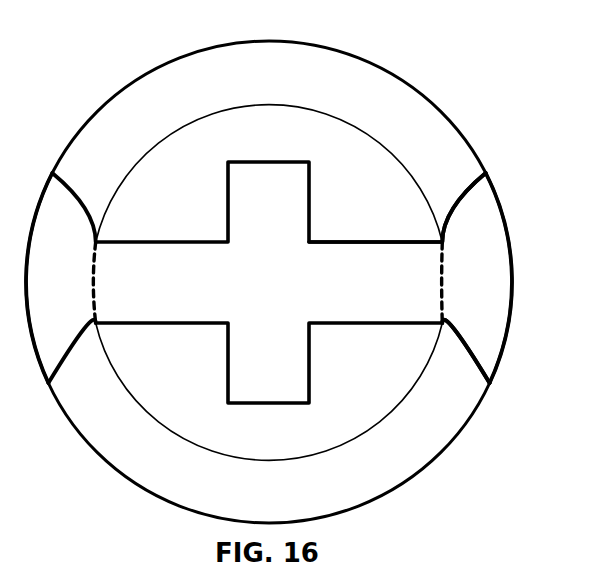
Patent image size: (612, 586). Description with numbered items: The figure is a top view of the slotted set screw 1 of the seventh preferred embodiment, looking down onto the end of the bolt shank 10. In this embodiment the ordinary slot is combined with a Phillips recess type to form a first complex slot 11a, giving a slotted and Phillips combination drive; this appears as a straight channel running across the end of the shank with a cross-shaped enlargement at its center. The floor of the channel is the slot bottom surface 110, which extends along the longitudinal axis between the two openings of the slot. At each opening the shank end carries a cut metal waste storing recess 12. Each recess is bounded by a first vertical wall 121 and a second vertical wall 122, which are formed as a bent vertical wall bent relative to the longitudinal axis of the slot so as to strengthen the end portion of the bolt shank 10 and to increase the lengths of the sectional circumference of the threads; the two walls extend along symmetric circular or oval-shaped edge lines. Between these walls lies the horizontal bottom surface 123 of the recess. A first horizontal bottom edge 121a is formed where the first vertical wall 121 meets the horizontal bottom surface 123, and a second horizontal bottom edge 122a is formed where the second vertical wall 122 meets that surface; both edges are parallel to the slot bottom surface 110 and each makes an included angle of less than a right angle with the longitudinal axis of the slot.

The slotted set screw 1 is at (460, 78).
The bolt shank 10 is at (360, 83).
The slot bottom surface 110 is at (148, 252).
The first complex slot 11a is at (330, 232).
The cut metal waste storing recess 12 is at (526, 290).
The first vertical wall 121 is at (470, 388).
The first horizontal bottom edge 121a is at (471, 358).
The second vertical wall 122 is at (462, 190).
The second horizontal bottom edge 122a is at (469, 193).
The horizontal bottom surface 123 is at (490, 280).